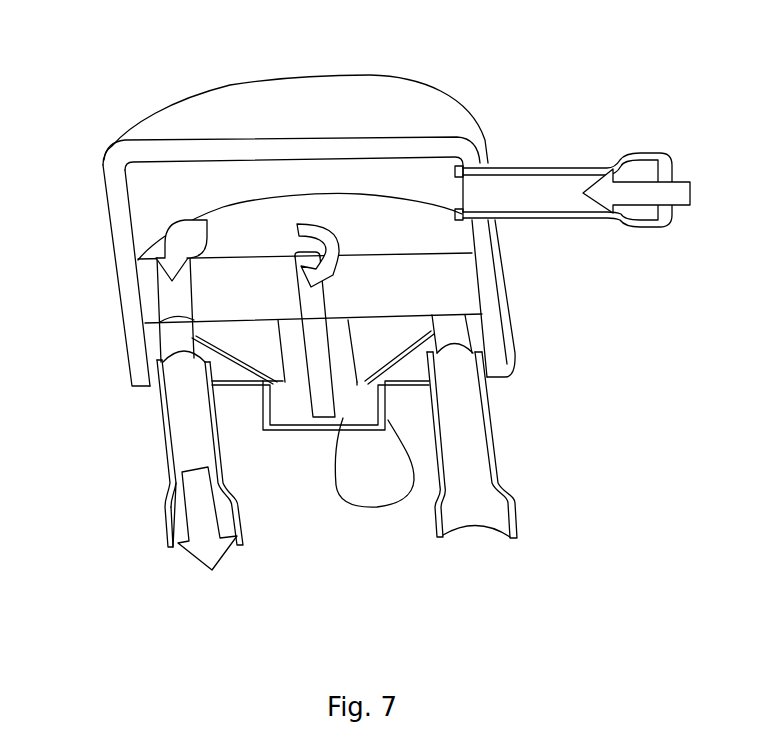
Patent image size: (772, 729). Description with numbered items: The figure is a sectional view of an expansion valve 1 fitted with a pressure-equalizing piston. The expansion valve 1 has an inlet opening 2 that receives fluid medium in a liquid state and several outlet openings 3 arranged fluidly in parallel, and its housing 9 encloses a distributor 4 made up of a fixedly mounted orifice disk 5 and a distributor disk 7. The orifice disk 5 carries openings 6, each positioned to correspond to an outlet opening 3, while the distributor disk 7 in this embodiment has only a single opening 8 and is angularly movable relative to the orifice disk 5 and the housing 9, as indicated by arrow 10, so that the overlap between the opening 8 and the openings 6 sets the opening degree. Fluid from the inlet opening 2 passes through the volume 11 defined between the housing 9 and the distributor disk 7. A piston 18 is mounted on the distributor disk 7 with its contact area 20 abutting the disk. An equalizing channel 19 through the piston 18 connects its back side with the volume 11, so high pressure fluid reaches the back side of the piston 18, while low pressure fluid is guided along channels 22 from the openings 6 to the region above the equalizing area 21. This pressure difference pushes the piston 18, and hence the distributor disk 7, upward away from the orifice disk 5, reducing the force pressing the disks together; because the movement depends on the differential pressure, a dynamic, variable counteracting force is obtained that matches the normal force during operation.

The expansion valve 1 is at (592, 28).
The inlet opening 2 is at (653, 173).
The outlet openings 3 is at (447, 535).
The distributor 4 is at (518, 297).
The orifice disk 5 is at (240, 377).
The openings 6 is at (177, 345).
The distributor disk 7 is at (248, 228).
The opening 8 is at (172, 292).
The housing 9 is at (417, 110).
The arrow 10 is at (337, 240).
The volume 11 is at (157, 190).
The piston 18 is at (347, 397).
The equalizing channel 19 is at (323, 397).
The contact area 20 is at (335, 317).
The equalizing area 21 is at (365, 383).
The channels 22 is at (240, 368).